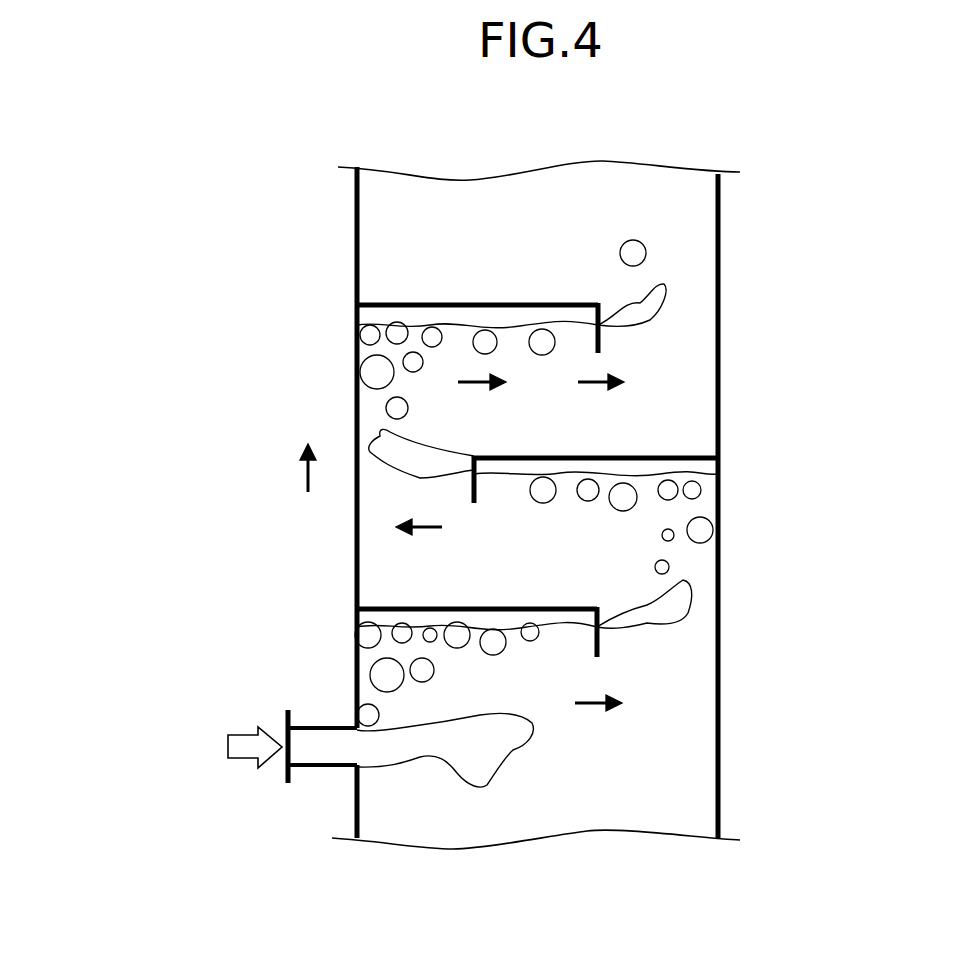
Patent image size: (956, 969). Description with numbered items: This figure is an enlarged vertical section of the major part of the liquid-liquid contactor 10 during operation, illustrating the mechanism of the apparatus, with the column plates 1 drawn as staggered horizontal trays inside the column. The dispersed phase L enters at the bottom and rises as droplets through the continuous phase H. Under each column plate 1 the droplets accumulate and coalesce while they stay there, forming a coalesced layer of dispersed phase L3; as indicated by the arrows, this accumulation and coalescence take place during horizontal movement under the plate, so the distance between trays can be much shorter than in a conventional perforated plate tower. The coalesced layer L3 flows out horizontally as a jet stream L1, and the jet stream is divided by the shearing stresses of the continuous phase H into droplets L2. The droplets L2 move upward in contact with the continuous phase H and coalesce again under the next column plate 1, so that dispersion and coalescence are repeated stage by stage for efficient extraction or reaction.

The tray / partition plate 1 is at (490, 294).
The reactor vessel 10 is at (732, 290).
The liquid feed L is at (493, 743).
The jet streams L1 is at (680, 600).
The droplets L2 is at (624, 494).
The coalesced layers of dispersed phase L3 is at (702, 472).
The continuous phase H is at (546, 573).